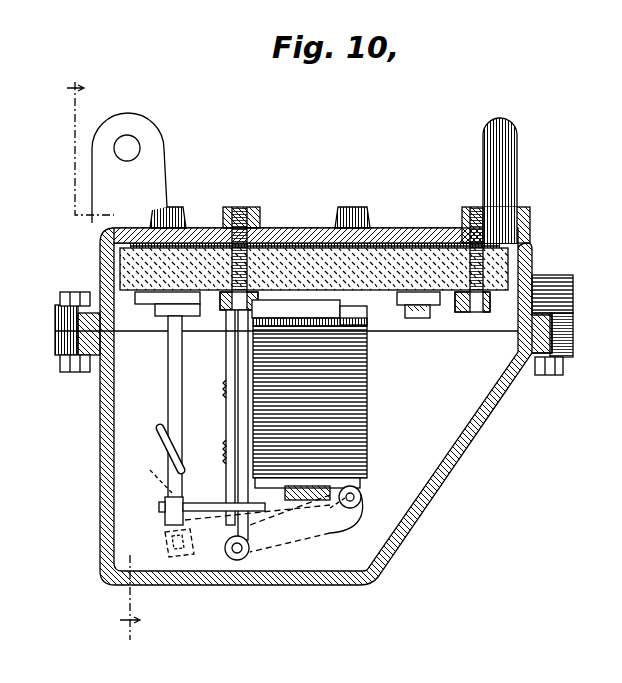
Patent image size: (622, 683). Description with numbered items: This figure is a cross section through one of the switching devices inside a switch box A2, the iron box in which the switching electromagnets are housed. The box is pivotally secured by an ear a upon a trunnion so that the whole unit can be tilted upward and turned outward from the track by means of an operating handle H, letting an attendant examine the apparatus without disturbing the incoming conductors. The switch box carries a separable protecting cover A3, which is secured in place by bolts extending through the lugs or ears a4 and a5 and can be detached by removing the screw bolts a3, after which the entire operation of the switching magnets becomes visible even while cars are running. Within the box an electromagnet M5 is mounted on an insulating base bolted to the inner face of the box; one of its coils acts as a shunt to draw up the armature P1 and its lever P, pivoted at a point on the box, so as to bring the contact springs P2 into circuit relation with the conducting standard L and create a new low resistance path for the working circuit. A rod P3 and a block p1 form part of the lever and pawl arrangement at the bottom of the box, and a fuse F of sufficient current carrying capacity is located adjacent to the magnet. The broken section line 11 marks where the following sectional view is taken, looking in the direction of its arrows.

The ear a is at (168, 148).
The switch box A2 is at (290, 232).
The protecting cover A3 is at (293, 583).
The operating handle H is at (483, 141).
The fuse F is at (420, 320).
The switching electro-magnet M5 is at (368, 405).
The conducting standard L is at (162, 432).
The lever P is at (363, 497).
The armature P1 is at (340, 505).
The contact spring P2 is at (168, 446).
The rod P3 is at (246, 462).
The pawl block p1 is at (165, 512).
The screw bolt a3 is at (75, 373).
The lug a4 is at (56, 350).
The lug a5 is at (56, 317).
The section line 11- 11 is at (101, 360).